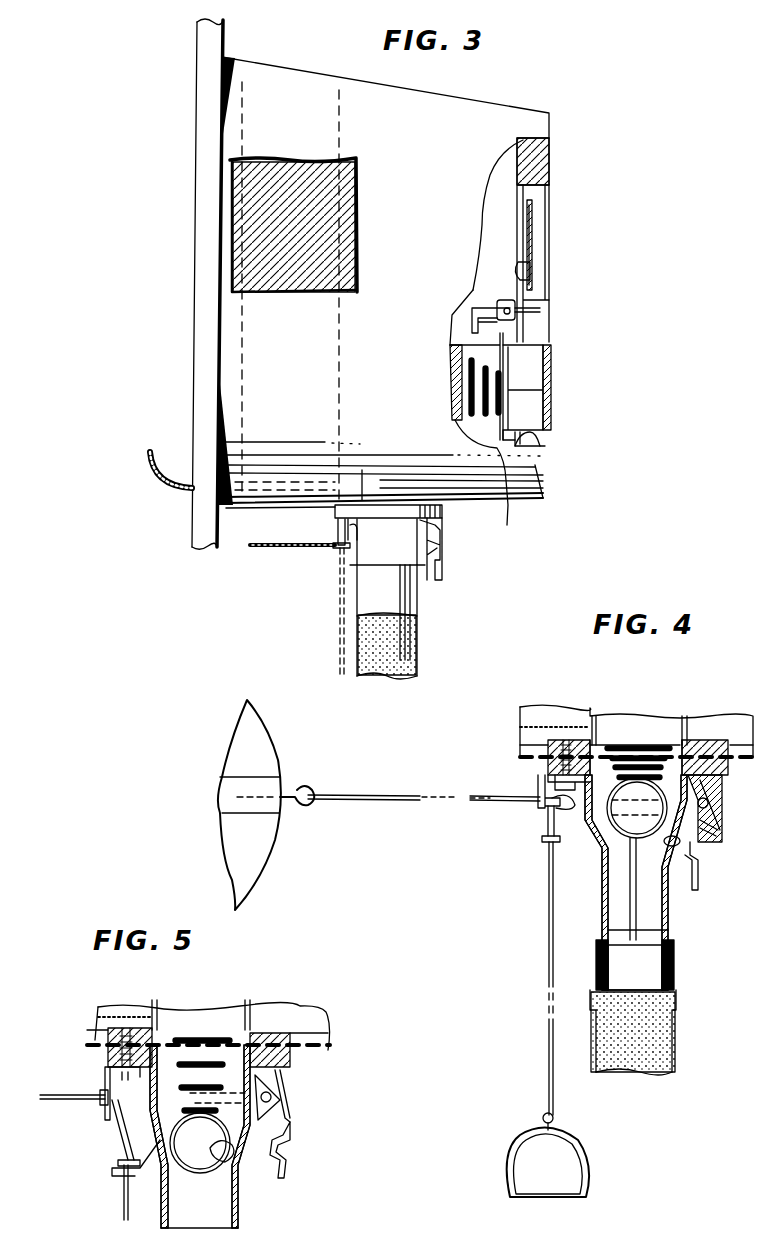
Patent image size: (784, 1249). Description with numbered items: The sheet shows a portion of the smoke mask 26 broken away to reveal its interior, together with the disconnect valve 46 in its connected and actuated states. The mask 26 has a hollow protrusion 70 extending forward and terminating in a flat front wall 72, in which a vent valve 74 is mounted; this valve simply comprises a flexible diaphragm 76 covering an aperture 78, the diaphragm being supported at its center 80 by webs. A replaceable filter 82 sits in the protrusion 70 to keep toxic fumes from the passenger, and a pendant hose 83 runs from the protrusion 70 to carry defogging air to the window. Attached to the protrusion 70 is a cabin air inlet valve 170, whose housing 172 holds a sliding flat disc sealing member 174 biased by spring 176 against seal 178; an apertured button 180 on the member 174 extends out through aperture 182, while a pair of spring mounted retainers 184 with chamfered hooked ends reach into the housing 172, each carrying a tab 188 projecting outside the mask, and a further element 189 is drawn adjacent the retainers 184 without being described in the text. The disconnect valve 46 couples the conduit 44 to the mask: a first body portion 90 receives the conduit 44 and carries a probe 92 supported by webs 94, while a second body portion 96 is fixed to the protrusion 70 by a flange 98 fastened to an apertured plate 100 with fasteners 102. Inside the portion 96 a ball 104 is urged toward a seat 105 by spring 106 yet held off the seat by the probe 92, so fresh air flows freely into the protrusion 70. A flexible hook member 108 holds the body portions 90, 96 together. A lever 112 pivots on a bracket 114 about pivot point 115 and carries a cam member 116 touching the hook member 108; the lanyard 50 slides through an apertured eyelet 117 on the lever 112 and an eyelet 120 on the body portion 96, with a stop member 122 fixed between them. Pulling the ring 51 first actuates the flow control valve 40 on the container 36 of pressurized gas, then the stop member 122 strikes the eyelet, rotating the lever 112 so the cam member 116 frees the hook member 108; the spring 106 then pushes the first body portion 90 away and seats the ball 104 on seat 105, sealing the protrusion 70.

In FIG. 3, the smoke mask 26 is at (190, 400).
In FIG. 3, the container 36 is at (253, 880).
In FIG. 3, the flow control valve 40 is at (285, 812).
In FIG. 3, the conduit 44 is at (388, 670).
In FIG. 4, the conduit 44 is at (630, 1072).
In FIG. 3, the disconnect valve 46 is at (420, 643).
In FIG. 4, the disconnect valve 46 is at (700, 905).
In FIG. 3, the lanyard 50 is at (292, 552).
In FIG. 4, the lanyard 50 is at (505, 798).
In FIG. 5, the lanyard 50 is at (122, 1192).
In FIG. 4, the ring 51 is at (510, 1195).
In FIG. 3, the hollow protrusion 70 is at (290, 76).
In FIG. 4, the hollow protrusion 70 is at (520, 752).
In FIG. 5, the hollow protrusion 70 is at (90, 1045).
In FIG. 3, the flat front wall 72 is at (550, 158).
In FIG. 3, the vent valve 74 is at (535, 210).
In FIG. 3, the flexible diaphragm 76 is at (534, 234).
In FIG. 3, the aperture 78 is at (531, 271).
In FIG. 3, the center of diaphragm 80 is at (512, 245).
In FIG. 3, the replaceable filter 82 is at (245, 238).
In FIG. 3, the pendant hose 83 is at (168, 492).
In FIG. 4, the pendant hose 83 is at (520, 724).
In FIG. 5, the pendant hose 83 is at (97, 1017).
In FIG. 4, the first body portion 90 is at (590, 928).
In FIG. 4, the probe 92 is at (630, 905).
In FIG. 4, the webs 94 is at (640, 975).
In FIG. 4, the second body portion 96 is at (590, 940).
In FIG. 4, the flange 98 is at (548, 775).
In FIG. 4, the apertured plate 100 is at (705, 740).
In FIG. 5, the apertured plate 100 is at (275, 1040).
In FIG. 4, the fasteners 102 is at (565, 740).
In FIG. 4, the ball 104 is at (625, 828).
In FIG. 5, the ball 104 is at (200, 1143).
In FIG. 4, the seat 105 is at (680, 842).
In FIG. 5, the seat 105 is at (220, 1150).
In FIG. 4, the spring 106 is at (612, 745).
In FIG. 5, the spring 106 is at (203, 1036).
In FIG. 4, the flexible hook member 108 is at (700, 886).
In FIG. 5, the flexible hook member 108 is at (286, 1172).
In FIG. 4, the lever 112 is at (548, 842).
In FIG. 5, the lever 112 is at (112, 1170).
In FIG. 4, the bracket 114 is at (710, 790).
In FIG. 4, the pivot point 115 is at (708, 805).
In FIG. 5, the pivot point 115 is at (270, 1095).
In FIG. 4, the cam member 116 is at (716, 828).
In FIG. 5, the cam member 116 is at (290, 1122).
In FIG. 4, the apertured eyelet 117 is at (542, 838).
In FIG. 5, the apertured eyelet 117 is at (118, 1158).
In FIG. 4, the apertured eyelet 120 is at (538, 798).
In FIG. 4, the stop member 122 is at (548, 806).
In FIG. 5, the stop member 122 is at (122, 1150).
In FIG. 3, the cabin air inlet valve 170 is at (552, 404).
In FIG. 3, the housing 172 is at (451, 343).
In FIG. 3, the flat disc sealing member 174 is at (510, 365).
In FIG. 3, the spring 176 is at (455, 388).
In FIG. 3, the seal 178 is at (493, 482).
In FIG. 3, the apertured button 180 is at (548, 432).
In FIG. 3, the aperture 182 is at (530, 447).
In FIG. 3, the spring mounted retainers 184 is at (470, 318).
In FIG. 3, the tab 188 is at (541, 310).
In FIG. 3, the lug 189 is at (516, 315).